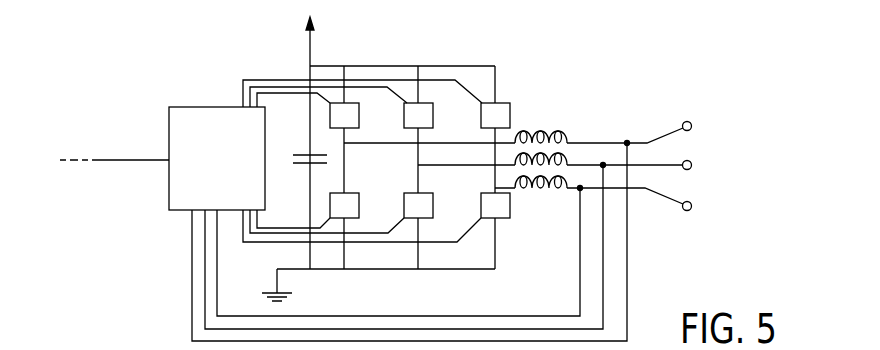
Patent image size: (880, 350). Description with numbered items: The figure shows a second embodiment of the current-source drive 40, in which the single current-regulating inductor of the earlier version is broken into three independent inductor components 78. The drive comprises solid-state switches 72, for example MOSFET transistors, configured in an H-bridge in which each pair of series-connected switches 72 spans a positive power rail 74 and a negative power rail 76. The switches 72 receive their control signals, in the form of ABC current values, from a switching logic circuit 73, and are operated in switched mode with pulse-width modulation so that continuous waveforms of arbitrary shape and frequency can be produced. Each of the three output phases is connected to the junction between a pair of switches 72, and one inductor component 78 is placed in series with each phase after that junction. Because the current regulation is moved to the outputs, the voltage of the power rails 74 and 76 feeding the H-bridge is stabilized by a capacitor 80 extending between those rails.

The current-source drive 40 is at (679, 91).
The solid-state switches 72 is at (359, 116).
The switching logic circuit 73 is at (230, 169).
The positive power rail 74 is at (402, 67).
The negative power rail 76 is at (388, 270).
The inductor components 78 is at (569, 139).
The capacitor 80 is at (305, 164).